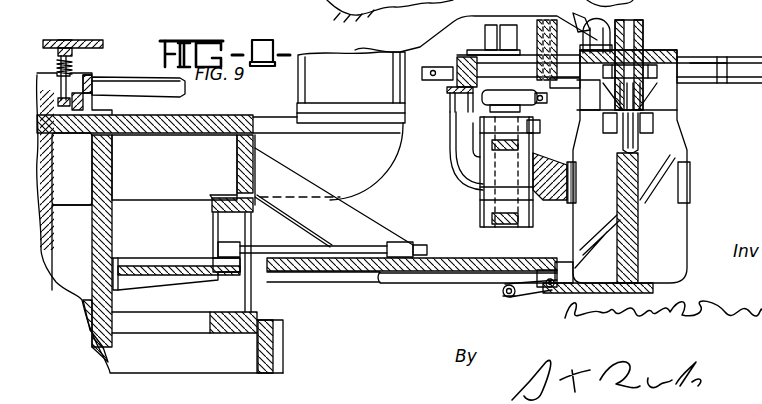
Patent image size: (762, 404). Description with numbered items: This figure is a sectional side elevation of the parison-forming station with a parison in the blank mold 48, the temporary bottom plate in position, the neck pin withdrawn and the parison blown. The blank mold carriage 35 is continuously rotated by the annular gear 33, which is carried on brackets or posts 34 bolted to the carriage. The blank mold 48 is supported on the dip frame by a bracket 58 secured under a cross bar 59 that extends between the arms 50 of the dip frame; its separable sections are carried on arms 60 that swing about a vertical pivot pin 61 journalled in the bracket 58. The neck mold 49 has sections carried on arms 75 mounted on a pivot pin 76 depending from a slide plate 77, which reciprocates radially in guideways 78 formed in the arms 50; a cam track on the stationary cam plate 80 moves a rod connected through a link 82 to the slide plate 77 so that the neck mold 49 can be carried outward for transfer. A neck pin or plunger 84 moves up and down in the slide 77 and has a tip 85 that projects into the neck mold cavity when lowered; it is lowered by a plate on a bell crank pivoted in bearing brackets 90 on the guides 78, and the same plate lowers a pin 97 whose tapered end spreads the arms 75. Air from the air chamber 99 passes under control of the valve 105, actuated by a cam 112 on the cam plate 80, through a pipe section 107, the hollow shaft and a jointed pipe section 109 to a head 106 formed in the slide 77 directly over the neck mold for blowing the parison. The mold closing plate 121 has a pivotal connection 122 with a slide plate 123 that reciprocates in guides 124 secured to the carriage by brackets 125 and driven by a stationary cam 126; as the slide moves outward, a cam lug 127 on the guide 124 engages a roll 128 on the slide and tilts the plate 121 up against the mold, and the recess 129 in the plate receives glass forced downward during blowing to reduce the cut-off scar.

The annular gear 33 is at (278, 354).
The brackets or posts 34 is at (247, 298).
The blank mold carriage 35 is at (204, 117).
The blank mold 48 is at (682, 227).
The neck mold 49 is at (673, 101).
The arms of the dip frame 50 is at (425, 37).
The bracket 58 is at (450, 153).
The cross bar 59 is at (447, 100).
The blank mold arms 60 is at (552, 162).
The vertical pivot pin 61 is at (498, 207).
The neck mold arms 75 is at (573, 98).
The pivot pin 76 is at (582, 124).
The slide plate 77 is at (456, 58).
The guideways 78 is at (718, 80).
The stationary cam plate 80 is at (97, 30).
The link 82 is at (433, 80).
The neck pin or plunger 84 is at (620, 39).
The tip 85 is at (656, 116).
The bearing brackets 90 is at (486, 37).
The pin 97 is at (540, 40).
The air chamber 99 is at (80, 251).
The valve 105 is at (72, 169).
The head 106 is at (660, 63).
The pipe section 107 is at (136, 80).
The pipe section 109 is at (588, 22).
The cam 112 is at (58, 40).
The mold closing plate 121 is at (560, 290).
The pivotal connection 122 is at (565, 262).
The slide plate 123 is at (430, 264).
The guides 124 is at (318, 262).
The brackets 125 is at (347, 214).
The stationary cam 126 is at (200, 258).
The cam lug 127 is at (503, 284).
The roll 128 is at (506, 296).
The recess 129 is at (638, 281).